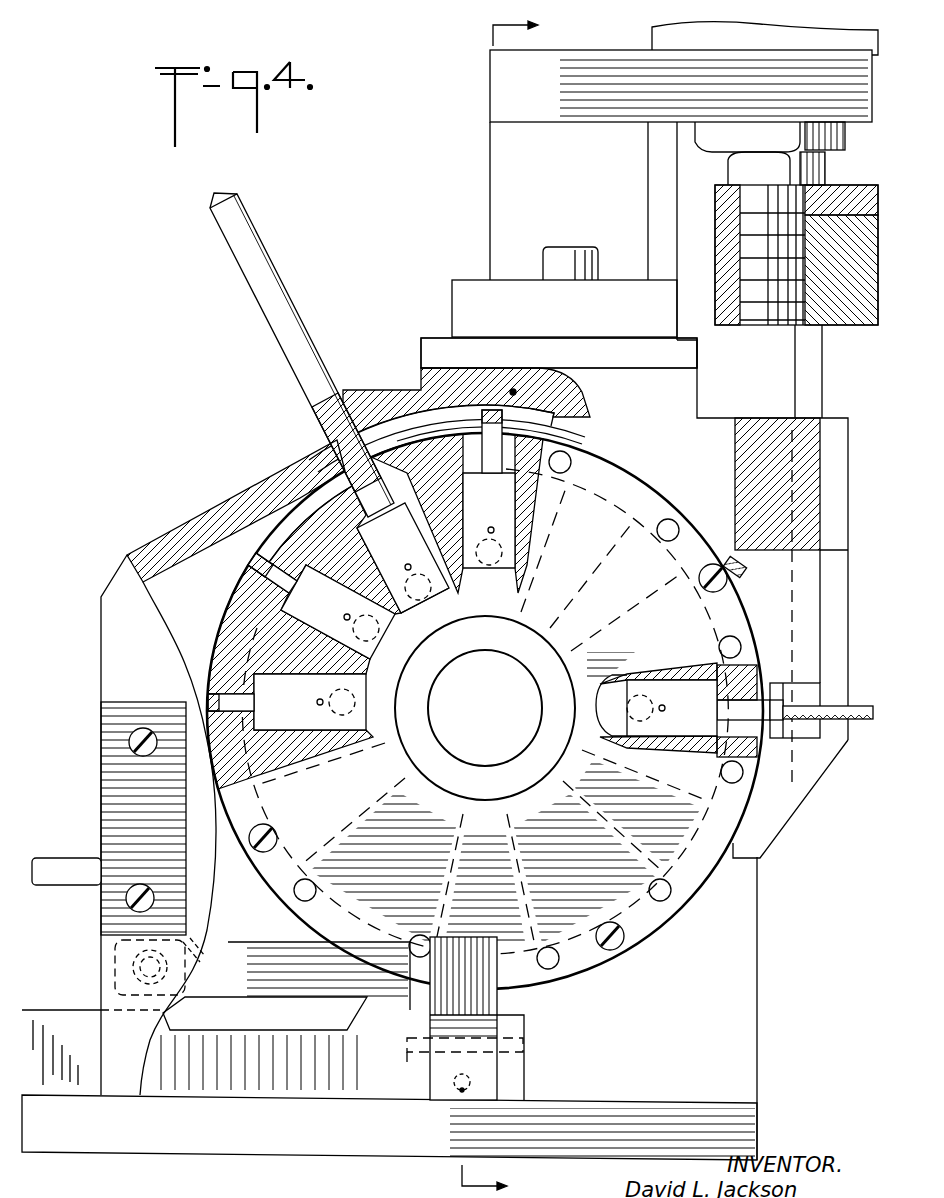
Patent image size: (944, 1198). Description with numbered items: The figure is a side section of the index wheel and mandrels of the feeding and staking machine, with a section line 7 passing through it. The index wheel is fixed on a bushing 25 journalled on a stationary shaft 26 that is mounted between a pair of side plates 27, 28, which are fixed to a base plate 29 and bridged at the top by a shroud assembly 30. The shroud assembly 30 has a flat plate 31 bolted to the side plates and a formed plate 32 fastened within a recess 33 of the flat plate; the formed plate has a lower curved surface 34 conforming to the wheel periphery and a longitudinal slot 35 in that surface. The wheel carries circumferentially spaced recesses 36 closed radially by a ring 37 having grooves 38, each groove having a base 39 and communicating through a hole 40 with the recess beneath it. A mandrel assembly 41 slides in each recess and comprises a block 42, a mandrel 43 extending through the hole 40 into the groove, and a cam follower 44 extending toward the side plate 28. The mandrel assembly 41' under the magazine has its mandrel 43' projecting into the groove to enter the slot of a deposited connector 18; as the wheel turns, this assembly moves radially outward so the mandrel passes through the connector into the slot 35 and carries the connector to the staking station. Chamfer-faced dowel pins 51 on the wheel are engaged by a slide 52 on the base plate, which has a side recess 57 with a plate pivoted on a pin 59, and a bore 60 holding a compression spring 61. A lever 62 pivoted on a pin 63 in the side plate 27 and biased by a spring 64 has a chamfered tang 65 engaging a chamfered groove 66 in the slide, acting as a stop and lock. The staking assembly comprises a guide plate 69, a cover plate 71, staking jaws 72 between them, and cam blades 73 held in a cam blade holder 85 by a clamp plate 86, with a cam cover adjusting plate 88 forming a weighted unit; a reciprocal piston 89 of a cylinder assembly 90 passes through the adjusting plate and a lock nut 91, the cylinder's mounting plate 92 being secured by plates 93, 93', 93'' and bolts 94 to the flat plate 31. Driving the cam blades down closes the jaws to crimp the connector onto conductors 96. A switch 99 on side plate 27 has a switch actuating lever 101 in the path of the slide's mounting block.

The section line 7- 7 is at (509, 607).
The connector 18 is at (318, 418).
The bushing 25 is at (554, 641).
The stationary shaft 26 is at (482, 666).
The side plate 27 is at (101, 655).
The side plate 28 is at (148, 600).
The base plate 29 is at (757, 1123).
The shroud assembly 30 is at (428, 325).
The flat plate 31 is at (421, 352).
The formed plate 32 is at (430, 378).
The recess 33 is at (515, 390).
The lower curved surface 34 is at (562, 422).
The longitudinal slot 35 is at (575, 392).
The recess 36 is at (564, 671).
The ring 37 is at (224, 640).
The groove 38 is at (236, 601).
The base 39 is at (250, 590).
The hole 40 is at (343, 527).
The mandrel assembly 41 is at (491, 630).
The mandrel assembly 41' is at (439, 603).
The block 42 is at (342, 600).
The mandrel 43 is at (246, 571).
The mandrel 43' is at (370, 442).
The cam follower 44 is at (489, 489).
The dowel pin 51 is at (312, 896).
The slide 52 is at (512, 1060).
The side recess 57 is at (428, 1068).
The pin 59 is at (407, 1048).
The bore 60 is at (470, 1090).
The compression spring 61 is at (460, 1098).
The lever 62 is at (236, 948).
The pin 63 is at (112, 968).
The spring 64 is at (192, 958).
The chamfered tang 65 is at (362, 1000).
The chamfered groove 66 is at (218, 1040).
The guide plate 69 is at (790, 808).
The cover plate 71 is at (836, 633).
The staking jaw 72 is at (805, 683).
The cam blade 73 is at (795, 372).
The cam blade holder 85 is at (722, 247).
The clamp plate 86 is at (843, 320).
The cam cover adjusting plate 88 is at (848, 200).
The reciprocal piston 89 is at (760, 312).
The cylinder assembly 90 is at (646, 36).
The lock nut 91 is at (740, 170).
The mounting plate 92 is at (490, 87).
The plate 93 is at (555, 231).
The plate 93' is at (545, 285).
The plate 93'' is at (623, 201).
The bolt 94 is at (545, 262).
The conductor 96 is at (855, 722).
The switch 99 is at (110, 770).
The switch actuating lever 101 is at (53, 860).